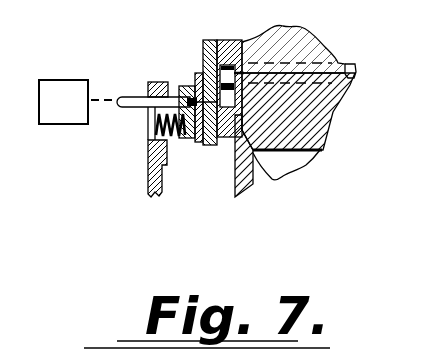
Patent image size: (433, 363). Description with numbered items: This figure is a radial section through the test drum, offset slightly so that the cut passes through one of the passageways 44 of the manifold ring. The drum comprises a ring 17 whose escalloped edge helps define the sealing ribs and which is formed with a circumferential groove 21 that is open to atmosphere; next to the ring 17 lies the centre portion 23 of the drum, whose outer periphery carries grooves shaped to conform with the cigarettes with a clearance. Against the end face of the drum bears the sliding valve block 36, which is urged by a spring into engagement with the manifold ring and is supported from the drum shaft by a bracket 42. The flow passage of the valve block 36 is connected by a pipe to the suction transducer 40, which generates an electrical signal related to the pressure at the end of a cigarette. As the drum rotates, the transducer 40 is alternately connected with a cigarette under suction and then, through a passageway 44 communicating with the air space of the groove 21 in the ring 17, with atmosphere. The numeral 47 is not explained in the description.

The suction transducer 40 is at (56, 90).
The bracket 42 is at (153, 178).
The passageways 44 is at (187, 141).
The sliding valve block 36 is at (190, 142).
The circumferential groove 21 is at (204, 79).
The pin / slotted guide 47 is at (232, 137).
The centre portion 23 is at (332, 118).
The ring 17 is at (242, 128).